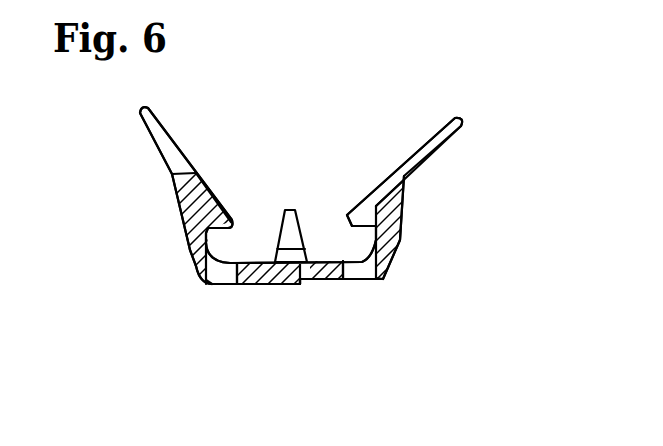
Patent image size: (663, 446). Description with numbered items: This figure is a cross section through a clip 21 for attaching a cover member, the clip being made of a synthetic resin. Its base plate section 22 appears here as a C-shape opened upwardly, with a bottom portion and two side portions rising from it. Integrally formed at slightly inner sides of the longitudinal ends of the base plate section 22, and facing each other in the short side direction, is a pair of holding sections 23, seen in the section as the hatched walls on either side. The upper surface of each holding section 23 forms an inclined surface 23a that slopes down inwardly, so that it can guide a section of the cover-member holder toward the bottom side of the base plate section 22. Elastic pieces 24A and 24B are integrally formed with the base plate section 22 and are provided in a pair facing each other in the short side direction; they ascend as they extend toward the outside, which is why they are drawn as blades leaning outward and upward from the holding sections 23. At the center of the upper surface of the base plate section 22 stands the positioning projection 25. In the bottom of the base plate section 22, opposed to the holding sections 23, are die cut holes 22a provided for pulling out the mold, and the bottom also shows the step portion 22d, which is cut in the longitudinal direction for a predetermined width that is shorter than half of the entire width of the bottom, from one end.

The clip 21 is at (431, 231).
The base plate section 22 is at (189, 273).
The die cut hole 22a is at (219, 276).
The step portion 22d is at (313, 280).
The holding section 23 is at (203, 210).
The inclined surface 23a is at (206, 204).
The elastic piece 24A is at (158, 144).
The elastic piece 24B is at (433, 135).
The positioning projection 25 is at (288, 210).